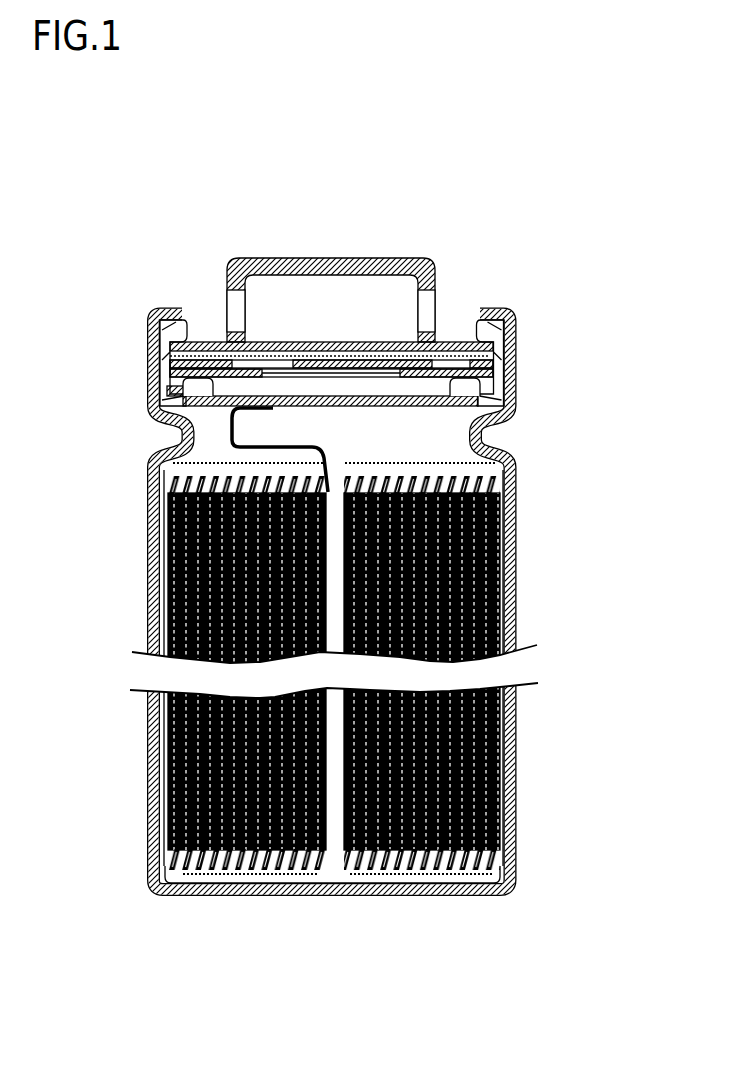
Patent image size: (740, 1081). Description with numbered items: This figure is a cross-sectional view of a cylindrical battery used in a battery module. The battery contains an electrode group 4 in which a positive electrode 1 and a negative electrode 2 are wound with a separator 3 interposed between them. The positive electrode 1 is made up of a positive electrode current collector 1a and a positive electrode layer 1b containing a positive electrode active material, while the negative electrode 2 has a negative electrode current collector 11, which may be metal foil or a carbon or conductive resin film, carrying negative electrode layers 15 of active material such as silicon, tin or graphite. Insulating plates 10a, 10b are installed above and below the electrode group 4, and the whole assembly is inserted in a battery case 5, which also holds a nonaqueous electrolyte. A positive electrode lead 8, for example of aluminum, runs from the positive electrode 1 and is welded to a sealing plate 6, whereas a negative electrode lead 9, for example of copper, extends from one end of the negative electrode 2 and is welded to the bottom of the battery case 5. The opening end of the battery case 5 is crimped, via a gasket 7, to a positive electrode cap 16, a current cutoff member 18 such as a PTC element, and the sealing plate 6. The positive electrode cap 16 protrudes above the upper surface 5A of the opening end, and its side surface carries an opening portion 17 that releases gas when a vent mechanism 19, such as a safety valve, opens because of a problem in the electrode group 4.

The positive electrode 1 is at (529, 664).
The positive electrode current collector 1a is at (513, 503).
The positive electrode layer 1b is at (513, 523).
The negative electrode 2 is at (481, 671).
The negative electrode current collector 11 is at (513, 575).
The negative electrode layers 15 is at (513, 551).
The separator 3 is at (512, 474).
The electrode group 4 is at (414, 662).
The battery case 5 is at (517, 740).
The upper surface 5A is at (177, 317).
The sealing plate 6 is at (377, 301).
The gasket 7 is at (493, 328).
The positive electrode lead 8 is at (240, 440).
The negative electrode lead 9 is at (493, 868).
The insulating plate 10a is at (493, 458).
The insulating plate 10b is at (163, 873).
The positive electrode cap 16 is at (365, 269).
The opening portion 17 is at (430, 308).
The current cutoff member 18 is at (497, 360).
The vent mechanism 19 is at (402, 356).